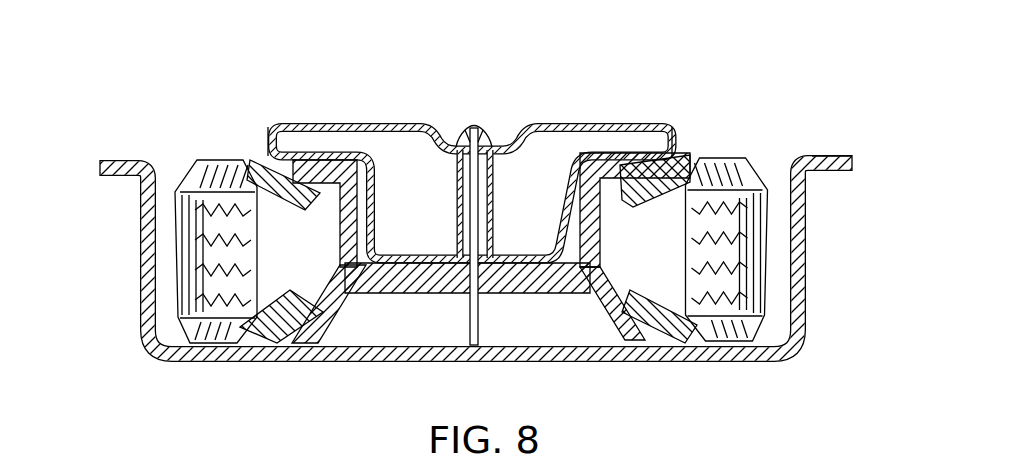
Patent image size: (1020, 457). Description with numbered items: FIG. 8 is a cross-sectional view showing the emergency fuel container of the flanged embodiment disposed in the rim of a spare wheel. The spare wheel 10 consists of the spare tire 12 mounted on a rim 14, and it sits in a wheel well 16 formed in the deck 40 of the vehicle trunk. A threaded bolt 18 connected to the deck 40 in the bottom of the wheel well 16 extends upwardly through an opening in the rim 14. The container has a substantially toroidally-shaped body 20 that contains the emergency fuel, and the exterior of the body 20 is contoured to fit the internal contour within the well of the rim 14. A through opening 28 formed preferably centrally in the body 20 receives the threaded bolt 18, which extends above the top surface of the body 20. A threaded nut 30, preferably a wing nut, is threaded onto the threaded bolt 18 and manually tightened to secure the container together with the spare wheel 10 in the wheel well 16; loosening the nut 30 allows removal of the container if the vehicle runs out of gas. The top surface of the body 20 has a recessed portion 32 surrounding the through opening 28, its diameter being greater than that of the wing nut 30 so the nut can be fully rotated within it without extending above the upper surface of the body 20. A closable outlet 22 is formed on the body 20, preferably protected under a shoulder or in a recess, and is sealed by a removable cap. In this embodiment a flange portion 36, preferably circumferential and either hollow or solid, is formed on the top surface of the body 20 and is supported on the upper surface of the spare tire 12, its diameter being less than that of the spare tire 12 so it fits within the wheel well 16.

The spare wheel 10 is at (175, 112).
The spare tire 12 is at (178, 248).
The rim 14 is at (343, 160).
The wheel well 16 is at (807, 230).
The threaded bolt 18 is at (465, 312).
The body 20 is at (400, 278).
The closable outlet 22 is at (558, 248).
The through opening 28 is at (495, 175).
The threaded nut 30 is at (443, 130).
The recessed portion 32 is at (500, 130).
The flange portion 36 is at (277, 123).
The deck 40 is at (835, 155).